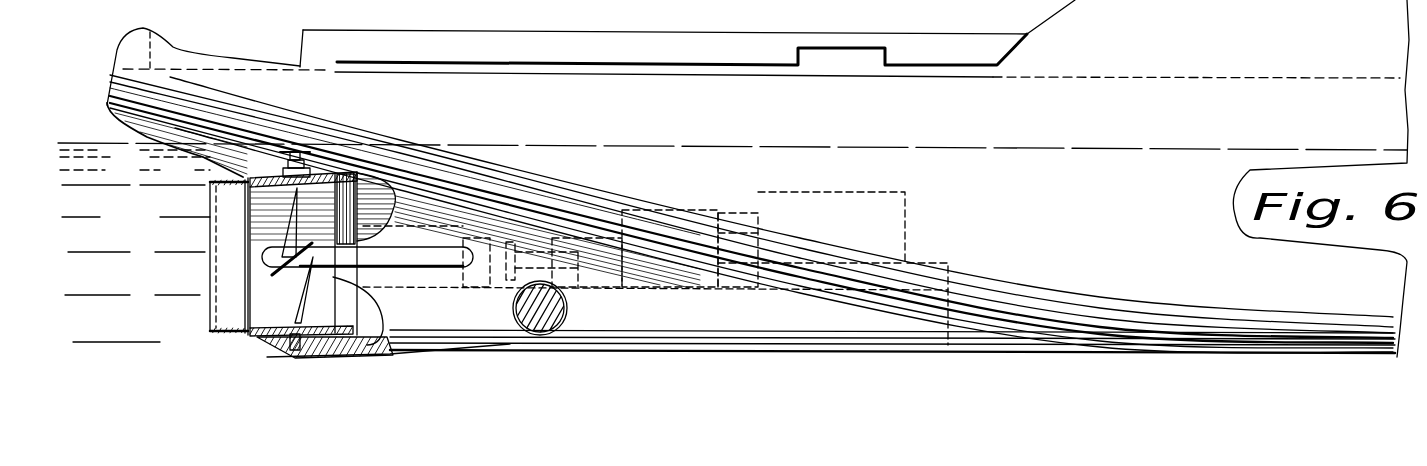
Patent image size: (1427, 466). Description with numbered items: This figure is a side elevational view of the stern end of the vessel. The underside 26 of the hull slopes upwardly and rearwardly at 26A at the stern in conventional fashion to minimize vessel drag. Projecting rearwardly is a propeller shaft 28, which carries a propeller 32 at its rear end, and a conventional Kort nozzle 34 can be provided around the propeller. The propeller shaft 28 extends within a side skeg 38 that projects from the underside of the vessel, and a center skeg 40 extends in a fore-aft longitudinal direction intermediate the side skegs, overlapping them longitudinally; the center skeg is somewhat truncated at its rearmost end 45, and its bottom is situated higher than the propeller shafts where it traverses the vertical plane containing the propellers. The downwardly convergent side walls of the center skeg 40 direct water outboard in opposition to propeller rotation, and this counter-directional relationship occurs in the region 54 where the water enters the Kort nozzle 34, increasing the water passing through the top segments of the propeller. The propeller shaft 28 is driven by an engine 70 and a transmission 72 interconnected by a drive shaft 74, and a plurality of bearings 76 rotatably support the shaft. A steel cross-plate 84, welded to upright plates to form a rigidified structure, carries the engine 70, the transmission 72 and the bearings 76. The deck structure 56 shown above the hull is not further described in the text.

The underside 26 is at (1381, 358).
The upwardly and rearwardly sloping portion of the underside 26A is at (520, 212).
The propeller shaft 28 is at (333, 269).
The propeller 32 is at (337, 212).
The Kort nozzle 34 is at (243, 337).
The side skeg 38 is at (1000, 355).
The center skeg 40 is at (190, 168).
The rearmost end 45 is at (166, 146).
The region 54 is at (377, 178).
The deck 56 is at (682, 32).
The engine 70 is at (906, 197).
The transmission 72 is at (718, 211).
The drive shaft 74 is at (758, 192).
The bearings 76 is at (474, 236).
The cross-plate 84 is at (745, 288).